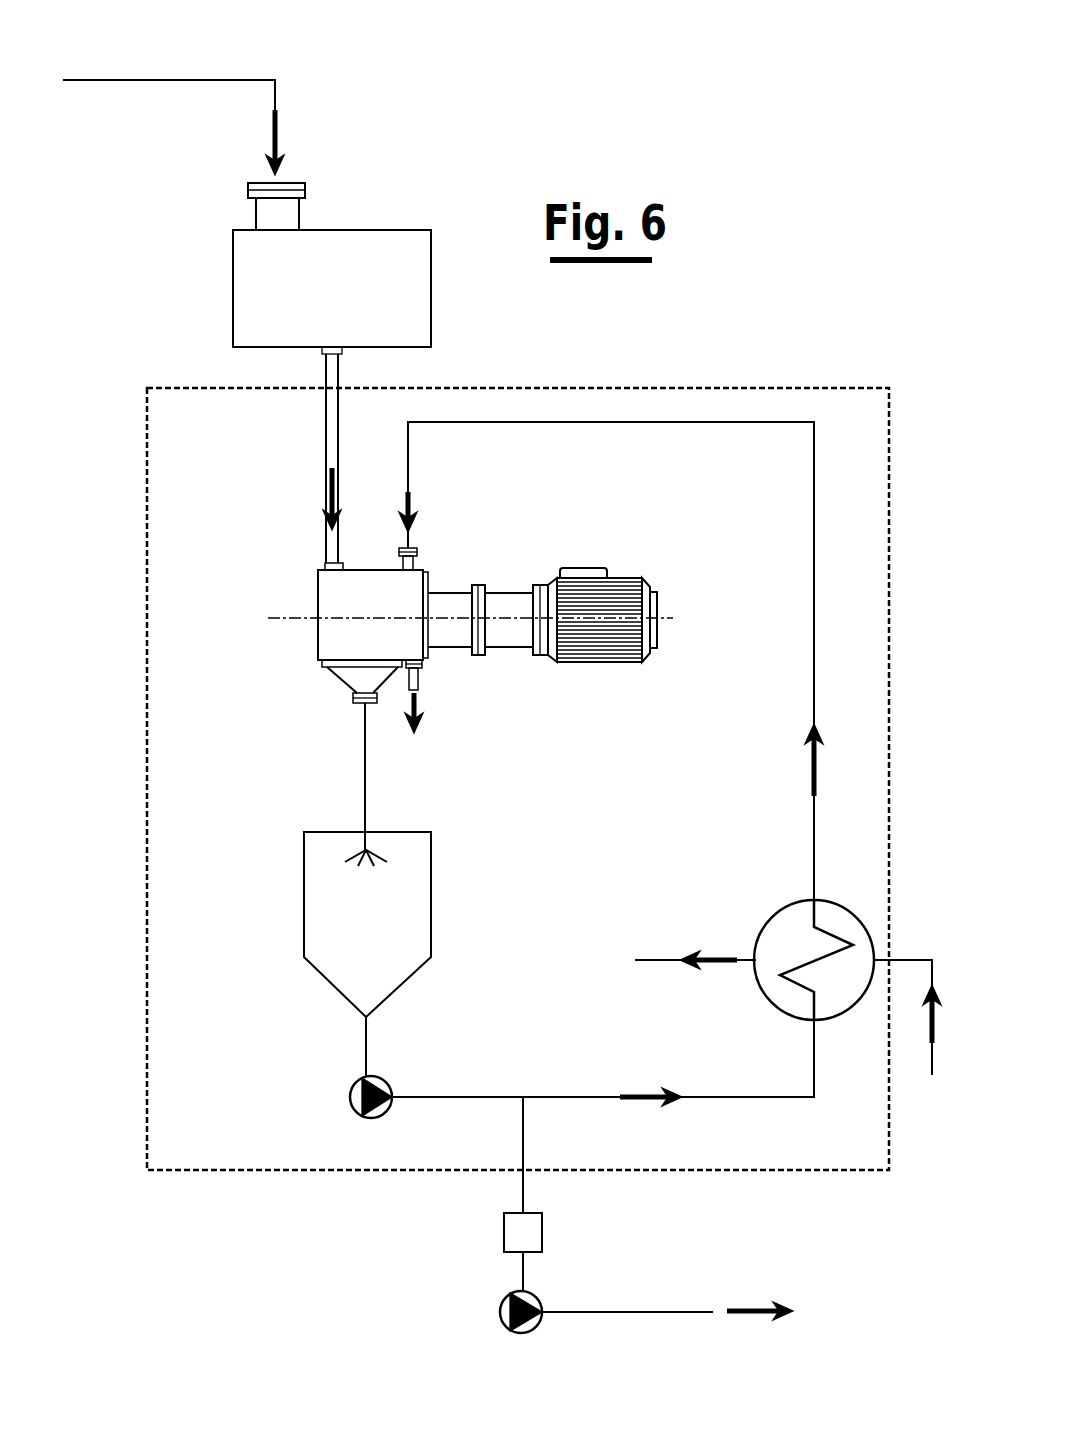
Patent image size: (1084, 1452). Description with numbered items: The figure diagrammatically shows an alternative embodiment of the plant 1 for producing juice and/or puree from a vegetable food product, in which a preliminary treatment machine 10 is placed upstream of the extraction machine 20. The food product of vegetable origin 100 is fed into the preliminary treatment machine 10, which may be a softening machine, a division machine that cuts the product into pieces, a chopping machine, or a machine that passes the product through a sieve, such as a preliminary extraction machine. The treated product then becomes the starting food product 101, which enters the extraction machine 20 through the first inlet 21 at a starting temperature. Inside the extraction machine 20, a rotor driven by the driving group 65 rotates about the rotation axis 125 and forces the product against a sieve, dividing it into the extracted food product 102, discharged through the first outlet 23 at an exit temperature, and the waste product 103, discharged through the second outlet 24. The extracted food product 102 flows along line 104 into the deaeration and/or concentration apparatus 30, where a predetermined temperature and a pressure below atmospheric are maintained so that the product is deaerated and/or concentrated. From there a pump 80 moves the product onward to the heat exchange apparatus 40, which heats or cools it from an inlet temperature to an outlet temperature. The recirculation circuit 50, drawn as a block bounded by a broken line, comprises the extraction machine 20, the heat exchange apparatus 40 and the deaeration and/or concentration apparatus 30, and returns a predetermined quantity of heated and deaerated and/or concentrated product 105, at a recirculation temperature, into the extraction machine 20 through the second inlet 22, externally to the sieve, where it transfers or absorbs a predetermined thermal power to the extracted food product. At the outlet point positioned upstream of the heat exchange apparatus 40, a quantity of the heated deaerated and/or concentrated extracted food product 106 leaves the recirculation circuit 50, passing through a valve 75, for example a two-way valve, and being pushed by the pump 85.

The plant 1 is at (852, 1238).
The preliminary treatment machine 10 is at (213, 226).
The extraction machine 20 is at (293, 655).
The first inlet 21 is at (320, 557).
The second inlet 22 is at (420, 560).
The first outlet 23 is at (340, 690).
The second outlet 24 is at (425, 680).
The deaeration and/or concentration apparatus 30 is at (298, 910).
The heat exchange apparatus 40 is at (755, 896).
The recirculation circuit 50 is at (745, 402).
The driving group 65 is at (637, 553).
The valve 75 is at (495, 1232).
The pump 80 is at (340, 1093).
The pump 85 is at (488, 1327).
The food product of vegetable origin 100 is at (160, 80).
The starting food product of vegetable origin 101 is at (328, 500).
The extracted food product 102 is at (368, 798).
The waste product 103 is at (428, 707).
The vessel outlet line 104 is at (368, 1048).
The recirculated food product 105 is at (412, 507).
The heated deaerated and/or concentrated extracted food product 106 is at (612, 1320).
The rotation axis 125 is at (283, 617).